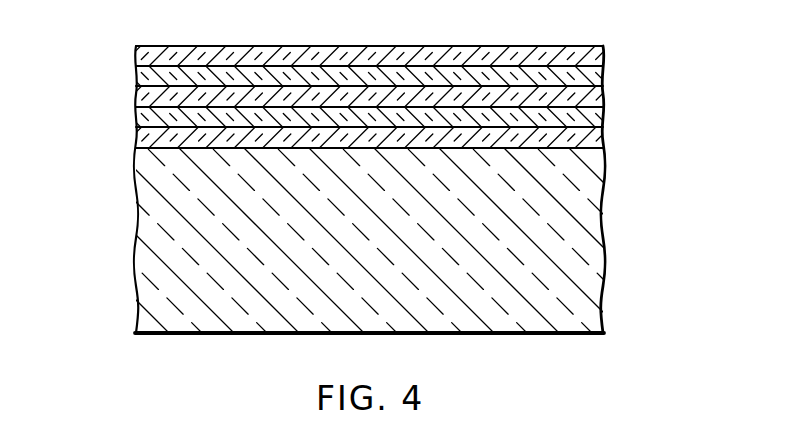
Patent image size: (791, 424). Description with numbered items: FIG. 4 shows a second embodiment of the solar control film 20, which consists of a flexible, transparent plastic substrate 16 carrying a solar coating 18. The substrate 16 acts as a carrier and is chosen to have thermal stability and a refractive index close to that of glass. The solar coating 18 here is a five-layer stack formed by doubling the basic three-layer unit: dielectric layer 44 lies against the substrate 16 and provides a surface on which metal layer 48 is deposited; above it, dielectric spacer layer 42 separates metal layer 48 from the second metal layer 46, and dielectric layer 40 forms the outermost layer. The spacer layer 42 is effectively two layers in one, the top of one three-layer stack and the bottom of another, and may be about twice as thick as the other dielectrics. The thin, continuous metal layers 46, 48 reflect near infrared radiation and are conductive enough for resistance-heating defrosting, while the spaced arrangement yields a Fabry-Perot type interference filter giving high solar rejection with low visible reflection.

The solar control film 20 is at (97, 213).
The substrate layer 16 is at (604, 224).
The solar coating 18 is at (615, 45).
The dielectric layer 40 is at (135, 49).
The metal layer 46 is at (140, 72).
The spacer layer 42 is at (140, 93).
The metal layer 48 is at (140, 116).
The dielectric layer 44 is at (137, 133).